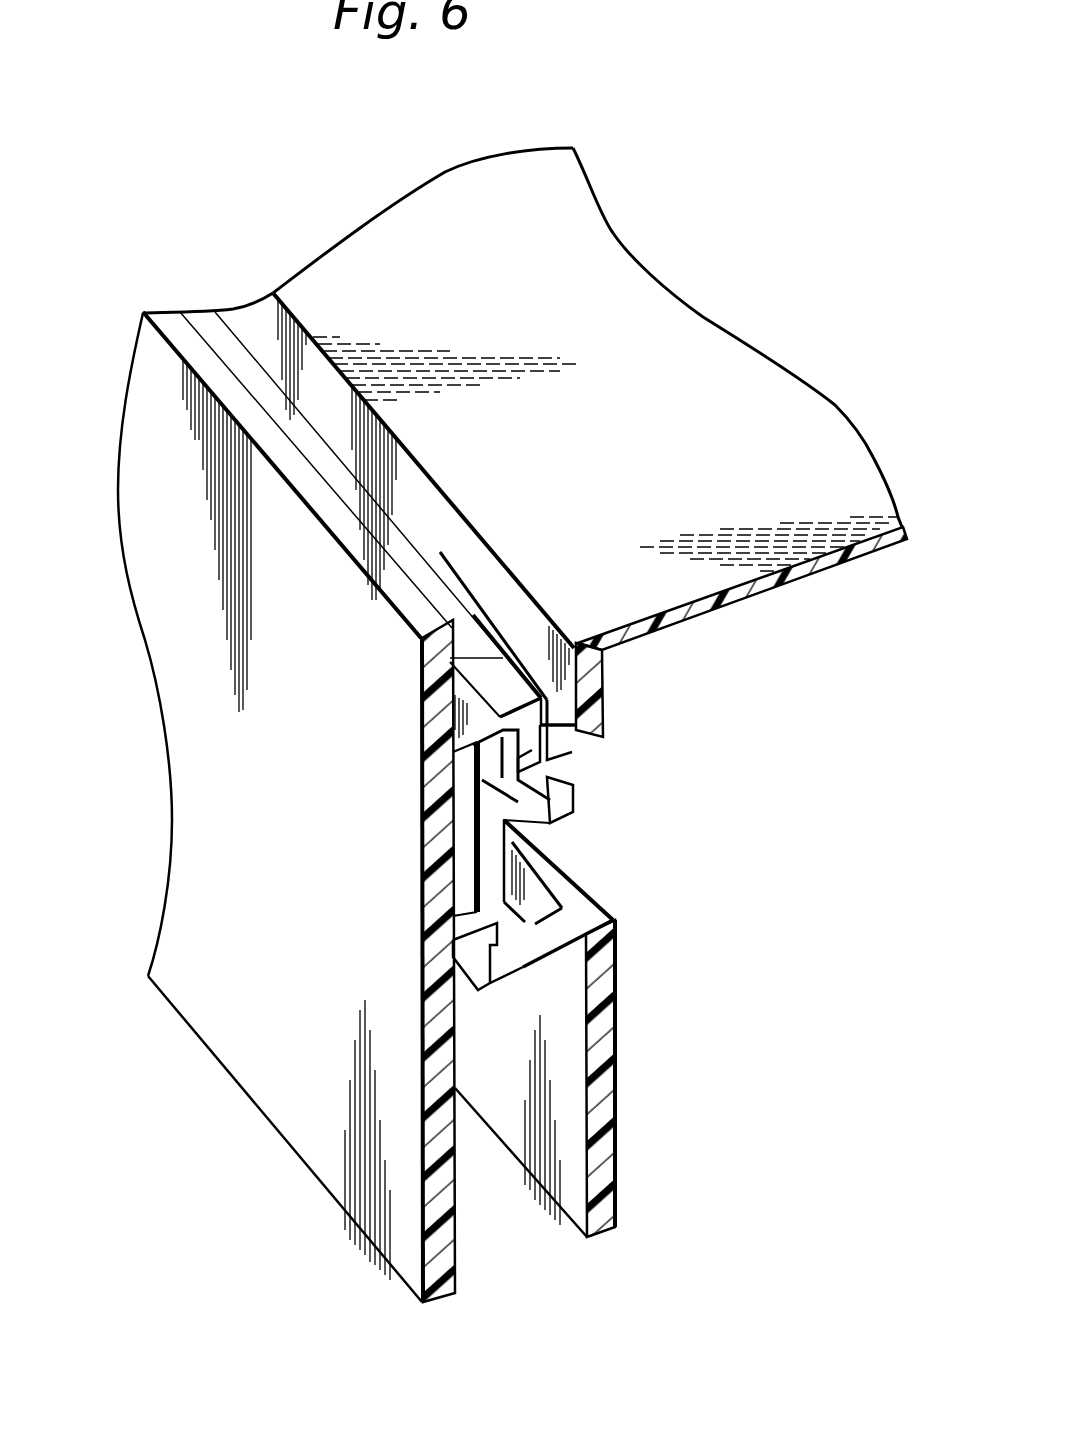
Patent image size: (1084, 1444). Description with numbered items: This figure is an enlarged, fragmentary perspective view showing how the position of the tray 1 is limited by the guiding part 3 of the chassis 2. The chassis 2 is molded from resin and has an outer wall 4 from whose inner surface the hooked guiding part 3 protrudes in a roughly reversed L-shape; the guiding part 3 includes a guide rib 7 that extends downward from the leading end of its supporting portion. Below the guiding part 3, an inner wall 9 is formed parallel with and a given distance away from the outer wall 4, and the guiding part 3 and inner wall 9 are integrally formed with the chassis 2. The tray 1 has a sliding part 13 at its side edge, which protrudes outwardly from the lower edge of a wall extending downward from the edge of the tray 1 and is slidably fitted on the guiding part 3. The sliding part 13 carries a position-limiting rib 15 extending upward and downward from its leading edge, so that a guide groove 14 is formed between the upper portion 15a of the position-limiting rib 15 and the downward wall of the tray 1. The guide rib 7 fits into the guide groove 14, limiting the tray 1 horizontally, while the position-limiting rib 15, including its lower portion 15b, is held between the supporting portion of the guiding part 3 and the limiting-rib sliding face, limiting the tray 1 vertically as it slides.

The tray 1 is at (802, 572).
The chassis 2 is at (136, 372).
The guiding part 3 is at (473, 640).
The outer wall 4 is at (442, 1283).
The guide rib 7 is at (534, 753).
The inner wall 9 is at (610, 1218).
The sliding part 13 is at (571, 828).
The guide groove 14 is at (573, 790).
The position-limiting rib 15 is at (484, 828).
The upper portion of the position-limiting rib 15a is at (482, 762).
The lower end of rib 15b is at (480, 900).